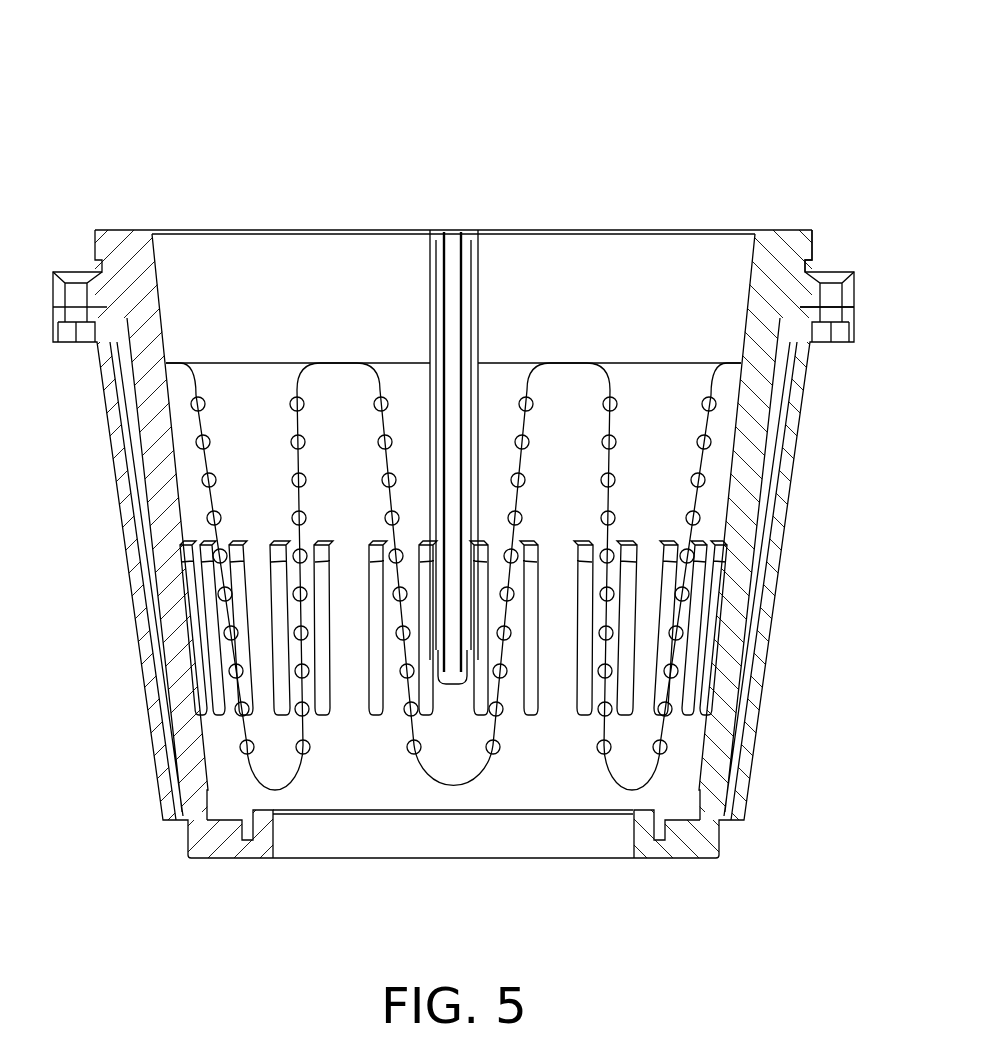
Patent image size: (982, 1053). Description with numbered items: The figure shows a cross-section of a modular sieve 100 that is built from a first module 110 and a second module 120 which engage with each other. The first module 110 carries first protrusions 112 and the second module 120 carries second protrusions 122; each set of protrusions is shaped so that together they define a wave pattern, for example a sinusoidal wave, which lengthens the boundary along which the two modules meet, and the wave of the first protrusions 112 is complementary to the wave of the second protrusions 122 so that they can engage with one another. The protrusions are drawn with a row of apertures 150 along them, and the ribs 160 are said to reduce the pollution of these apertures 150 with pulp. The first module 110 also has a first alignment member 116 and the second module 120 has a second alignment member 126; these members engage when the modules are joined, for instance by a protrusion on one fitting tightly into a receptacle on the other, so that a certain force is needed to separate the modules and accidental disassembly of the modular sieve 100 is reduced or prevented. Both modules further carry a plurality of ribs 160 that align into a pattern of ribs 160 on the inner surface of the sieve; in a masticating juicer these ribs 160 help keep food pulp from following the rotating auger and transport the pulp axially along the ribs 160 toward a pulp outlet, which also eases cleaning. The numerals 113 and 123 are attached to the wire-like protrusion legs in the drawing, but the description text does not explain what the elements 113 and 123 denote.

The modular sieve 100 is at (118, 80).
The first module 110 is at (232, 845).
The first protrusions 112 is at (338, 383).
The heating element outer leg 113 is at (198, 430).
The first alignment member 116 is at (828, 338).
The second module 120 is at (125, 240).
The second protrusions 122 is at (568, 383).
The heating element outer leg 123 is at (205, 470).
The second alignment member 126 is at (838, 277).
The apertures 150 is at (245, 750).
The ribs 160 is at (376, 700).